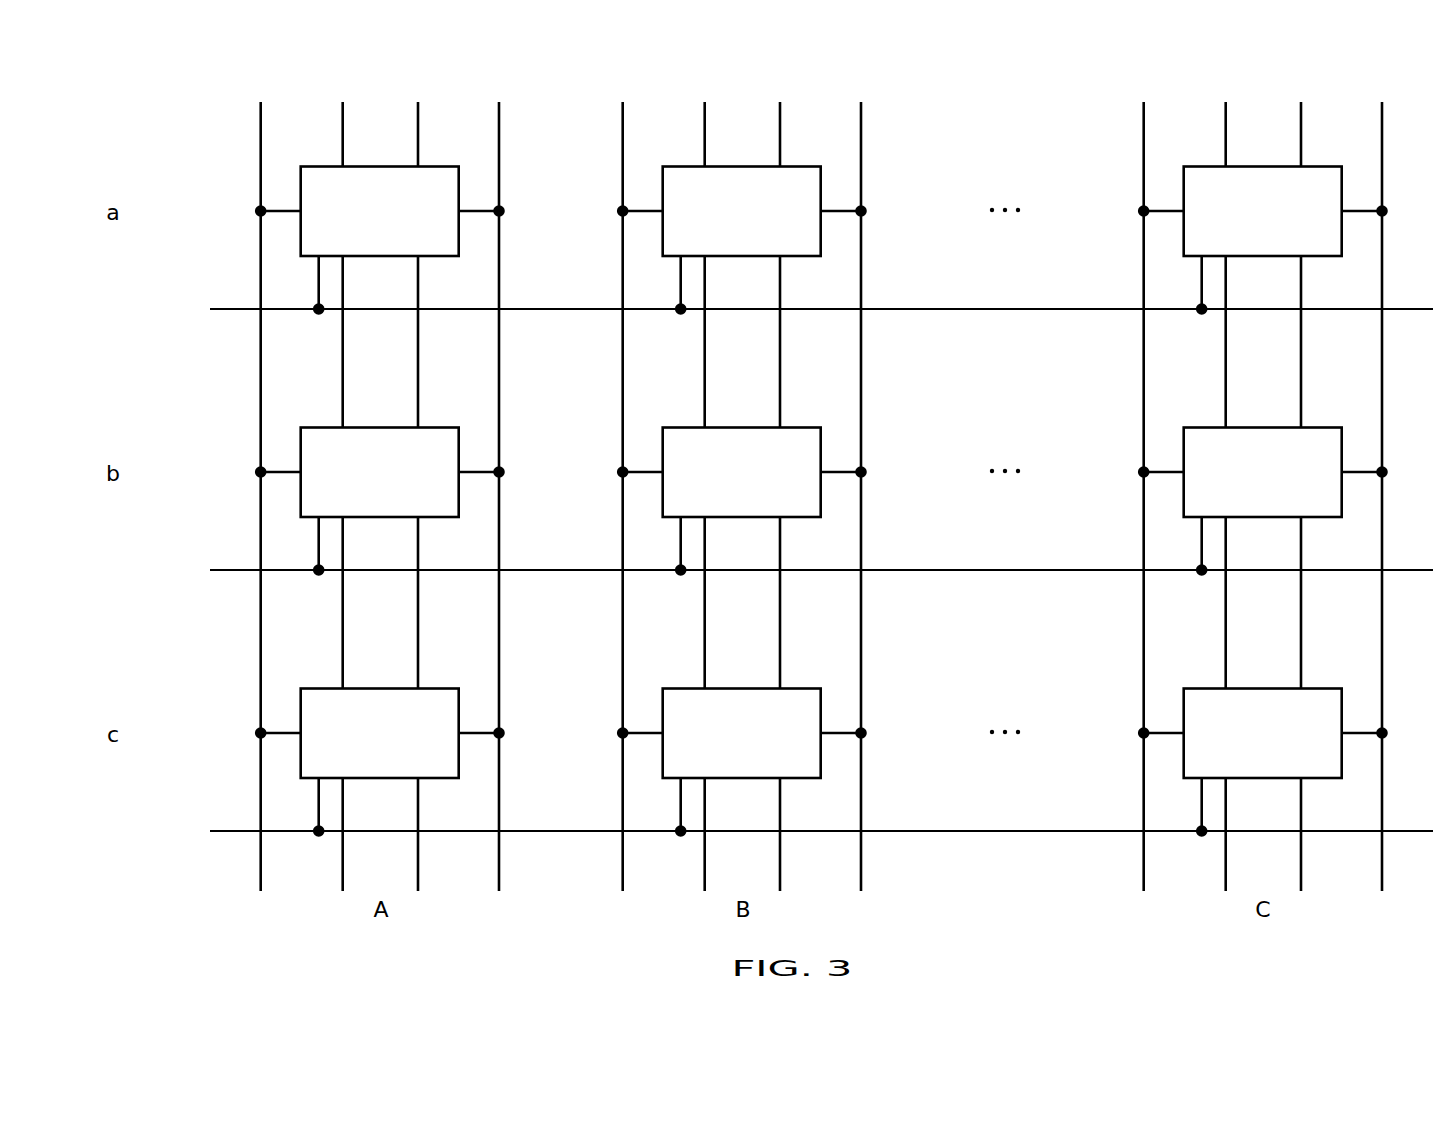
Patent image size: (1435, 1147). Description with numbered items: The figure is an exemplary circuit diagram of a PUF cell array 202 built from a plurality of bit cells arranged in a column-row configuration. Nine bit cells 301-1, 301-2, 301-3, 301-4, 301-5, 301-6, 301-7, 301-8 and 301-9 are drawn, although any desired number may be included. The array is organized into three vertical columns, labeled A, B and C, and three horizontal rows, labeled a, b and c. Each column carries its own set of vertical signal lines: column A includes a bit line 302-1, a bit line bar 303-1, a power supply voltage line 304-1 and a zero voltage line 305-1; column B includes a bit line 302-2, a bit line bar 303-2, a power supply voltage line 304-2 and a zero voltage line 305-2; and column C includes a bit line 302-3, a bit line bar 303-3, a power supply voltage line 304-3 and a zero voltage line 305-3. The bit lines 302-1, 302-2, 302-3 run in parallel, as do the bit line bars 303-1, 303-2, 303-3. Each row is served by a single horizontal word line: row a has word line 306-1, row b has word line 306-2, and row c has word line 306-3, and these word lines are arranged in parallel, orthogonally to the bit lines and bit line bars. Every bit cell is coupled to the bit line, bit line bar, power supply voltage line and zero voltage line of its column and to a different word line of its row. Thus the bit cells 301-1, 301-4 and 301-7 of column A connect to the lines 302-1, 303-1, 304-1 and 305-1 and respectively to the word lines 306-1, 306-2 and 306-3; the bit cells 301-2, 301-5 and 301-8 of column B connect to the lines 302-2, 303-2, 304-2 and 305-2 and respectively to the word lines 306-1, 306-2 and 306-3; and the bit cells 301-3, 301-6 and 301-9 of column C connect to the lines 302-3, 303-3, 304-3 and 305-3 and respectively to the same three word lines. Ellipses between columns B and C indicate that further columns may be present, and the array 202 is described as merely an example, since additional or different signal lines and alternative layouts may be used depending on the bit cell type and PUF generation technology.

The PUF cell array 202 is at (175, 110).
The bit cell 301-1 is at (410, 226).
The bit cell 301-2 is at (772, 226).
The bit cell 301-3 is at (1293, 226).
The bit cell 301-4 is at (410, 487).
The bit cell 301-5 is at (772, 487).
The bit cell 301-6 is at (1293, 487).
The bit cell 301-7 is at (410, 748).
The bit cell 301-8 is at (772, 748).
The bit cell 301-9 is at (1293, 748).
The bit line 302-1 is at (260, 483).
The bit line 302-2 is at (622, 483).
The bit line 302-3 is at (1143, 483).
The bit line bar 303-1 is at (499, 483).
The bit line bar 303-2 is at (861, 483).
The bit line bar 303-3 is at (1382, 483).
The power supply voltage line 304-1 is at (342, 483).
The power supply voltage line 304-2 is at (704, 483).
The power supply voltage line 304-3 is at (1225, 483).
The zero voltage line 305-1 is at (418, 483).
The zero voltage line 305-2 is at (780, 483).
The zero voltage line 305-3 is at (1301, 483).
The word line 306-1 is at (792, 310).
The word line 306-2 is at (792, 571).
The word line 306-3 is at (792, 832).